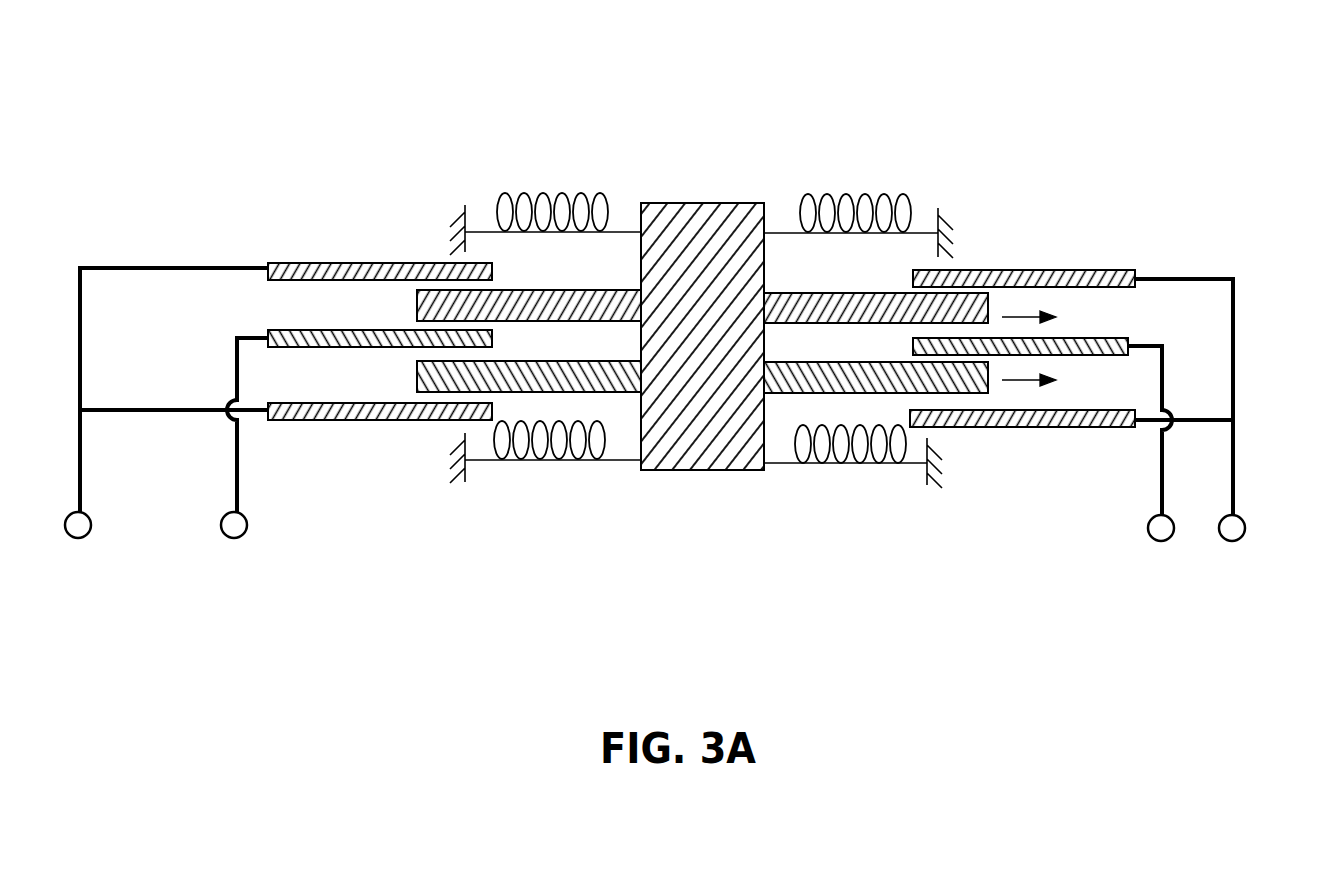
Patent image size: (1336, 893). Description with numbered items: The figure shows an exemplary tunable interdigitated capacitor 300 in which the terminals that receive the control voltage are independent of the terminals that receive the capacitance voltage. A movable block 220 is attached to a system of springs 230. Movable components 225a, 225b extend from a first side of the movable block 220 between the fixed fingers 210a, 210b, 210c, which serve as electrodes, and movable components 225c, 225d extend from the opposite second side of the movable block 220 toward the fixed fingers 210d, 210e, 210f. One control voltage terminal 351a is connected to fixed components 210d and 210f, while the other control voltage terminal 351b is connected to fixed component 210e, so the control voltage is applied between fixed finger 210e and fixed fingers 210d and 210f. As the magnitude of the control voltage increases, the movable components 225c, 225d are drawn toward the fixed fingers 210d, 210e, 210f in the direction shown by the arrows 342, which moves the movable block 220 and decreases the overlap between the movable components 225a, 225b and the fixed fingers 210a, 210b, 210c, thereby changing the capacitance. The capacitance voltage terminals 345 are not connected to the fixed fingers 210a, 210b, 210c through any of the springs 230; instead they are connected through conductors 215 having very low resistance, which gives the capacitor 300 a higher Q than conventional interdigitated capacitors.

The tunable interdigitated capacitor 300 is at (713, 56).
The conductors 215 is at (148, 266).
The fixed finger 210a is at (309, 262).
The fixed finger 210b is at (306, 329).
The fixed finger 210c is at (345, 421).
The fixed finger 210d is at (1065, 270).
The fixed finger 210e is at (1065, 338).
The fixed finger 210f is at (1055, 428).
The movable block 220 is at (700, 193).
The movable component 225a is at (545, 290).
The movable component 225b is at (560, 361).
The movable component 225c is at (805, 293).
The movable component 225d is at (800, 362).
The springs 230 is at (505, 195).
The arrows 342 is at (1013, 312).
The capacitance voltage terminals 345 is at (228, 512).
The control voltage terminal 351a is at (1240, 518).
The control voltage terminal 351b is at (1152, 518).